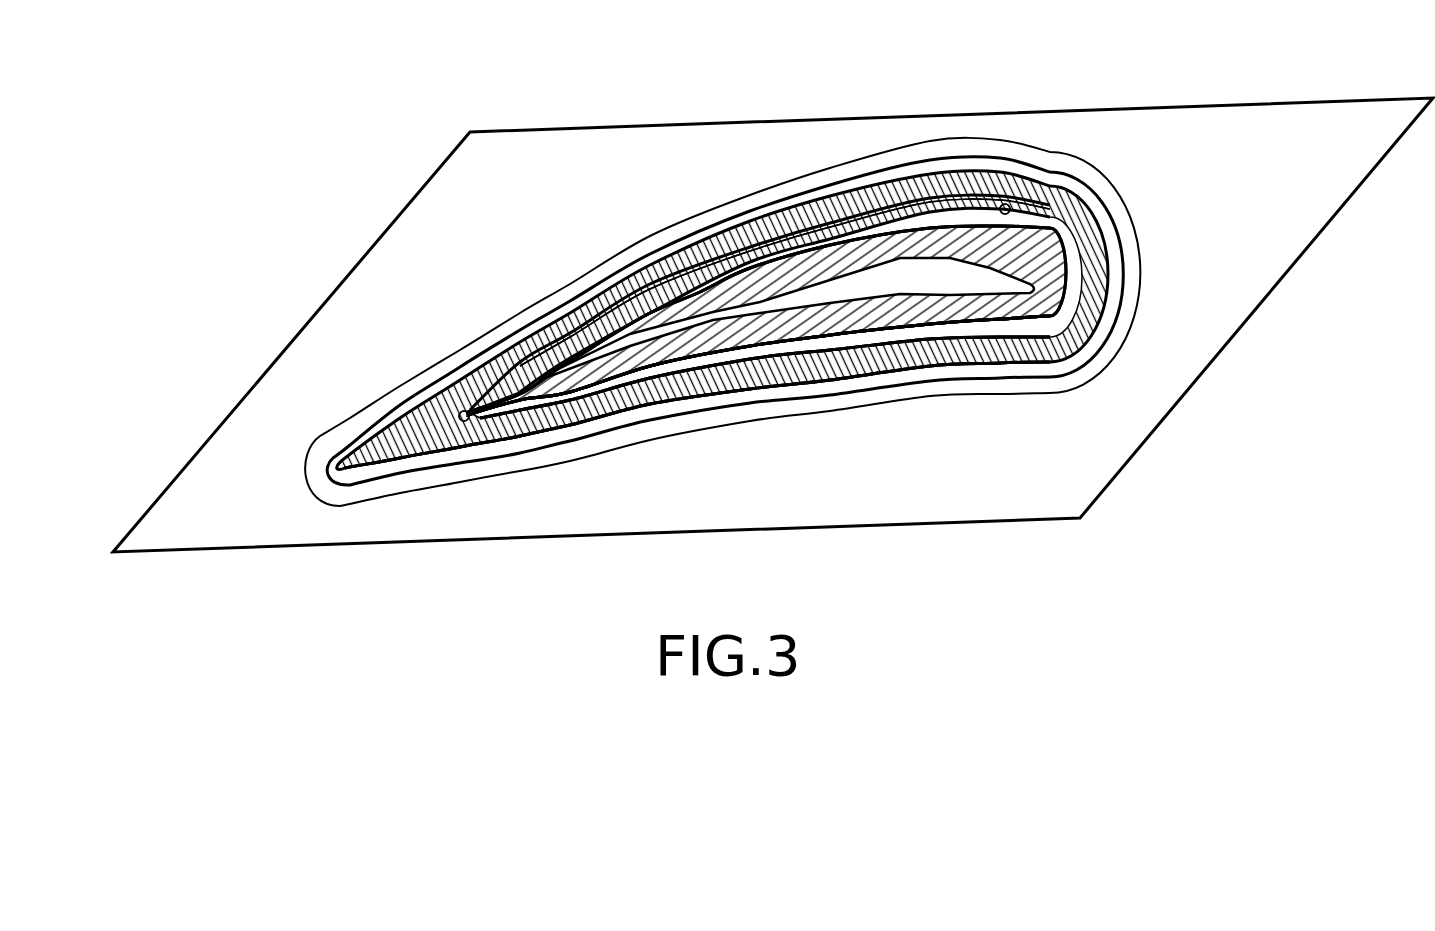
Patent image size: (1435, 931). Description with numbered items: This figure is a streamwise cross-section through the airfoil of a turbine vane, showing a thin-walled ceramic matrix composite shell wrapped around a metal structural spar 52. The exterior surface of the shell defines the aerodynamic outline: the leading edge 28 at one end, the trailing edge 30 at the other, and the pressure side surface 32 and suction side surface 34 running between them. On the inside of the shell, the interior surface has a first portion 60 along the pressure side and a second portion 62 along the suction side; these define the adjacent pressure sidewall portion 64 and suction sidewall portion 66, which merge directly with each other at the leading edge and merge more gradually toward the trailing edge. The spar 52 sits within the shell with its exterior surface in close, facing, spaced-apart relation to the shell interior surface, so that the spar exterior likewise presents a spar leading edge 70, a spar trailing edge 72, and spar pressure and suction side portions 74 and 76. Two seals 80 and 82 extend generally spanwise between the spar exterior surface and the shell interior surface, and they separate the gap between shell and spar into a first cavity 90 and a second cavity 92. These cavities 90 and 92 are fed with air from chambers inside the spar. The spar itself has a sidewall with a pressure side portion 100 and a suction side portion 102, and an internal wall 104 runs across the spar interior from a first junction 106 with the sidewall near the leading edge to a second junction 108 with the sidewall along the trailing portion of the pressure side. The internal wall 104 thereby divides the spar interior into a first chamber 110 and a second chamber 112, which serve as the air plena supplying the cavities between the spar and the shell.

The leading edge 28 is at (1093, 350).
The trailing edge 30 is at (307, 482).
The pressure side surface 32 is at (836, 358).
The suction side surface 34 is at (928, 185).
The structural spar 52 is at (1036, 252).
The first portion of shell interior surface 60 is at (643, 380).
The second portion of shell interior surface 62 is at (794, 236).
The pressure sidewall portion 64 is at (592, 408).
The suction sidewall portion 66 is at (657, 282).
The spar leading edge 70 is at (1037, 313).
The spar trailing edge 72 is at (462, 422).
The spar pressure side portion 74 is at (777, 352).
The spar suction side portion 76 is at (865, 205).
The seal 80 is at (1010, 205).
The seal 82 is at (462, 410).
The first cavity 90 is at (882, 340).
The second cavity 92 is at (745, 250).
The pressure side portion of spar sidewall 100 is at (988, 283).
The suction side portion of spar sidewall 102 is at (597, 325).
The internal wall 104 is at (908, 252).
The first junction 106 is at (1012, 210).
The second junction 108 is at (695, 318).
The first chamber 110 is at (1003, 303).
The second chamber 112 is at (705, 255).